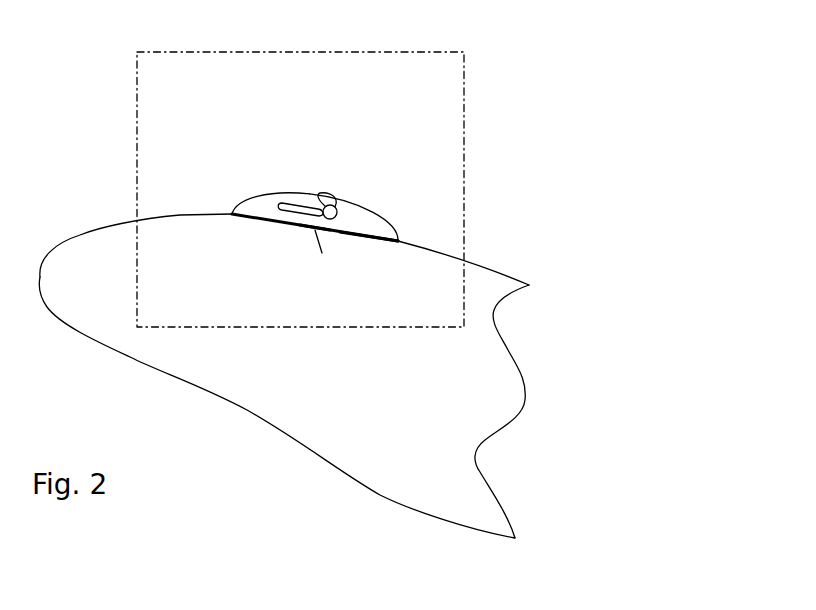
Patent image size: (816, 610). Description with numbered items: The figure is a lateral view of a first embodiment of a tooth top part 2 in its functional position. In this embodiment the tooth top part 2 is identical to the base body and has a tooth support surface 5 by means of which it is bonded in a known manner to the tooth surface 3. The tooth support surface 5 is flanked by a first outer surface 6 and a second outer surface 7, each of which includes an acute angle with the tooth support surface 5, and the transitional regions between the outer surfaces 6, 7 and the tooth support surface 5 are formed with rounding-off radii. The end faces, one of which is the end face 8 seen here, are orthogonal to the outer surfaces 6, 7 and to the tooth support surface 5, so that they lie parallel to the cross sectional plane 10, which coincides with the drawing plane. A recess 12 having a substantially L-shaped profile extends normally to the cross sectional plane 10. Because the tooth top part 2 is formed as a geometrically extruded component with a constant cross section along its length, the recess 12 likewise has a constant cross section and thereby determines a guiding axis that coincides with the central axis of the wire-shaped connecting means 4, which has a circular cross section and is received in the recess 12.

The tooth top part 2 is at (307, 185).
The tooth surface 3 is at (492, 267).
The connecting means 4 is at (330, 212).
The tooth support surface 5 is at (313, 227).
The first outer surface 6 is at (271, 194).
The second outer surface 7 is at (386, 221).
The end face 8 is at (358, 223).
The cross sectional plane 10 is at (137, 122).
The recess 12 is at (290, 198).